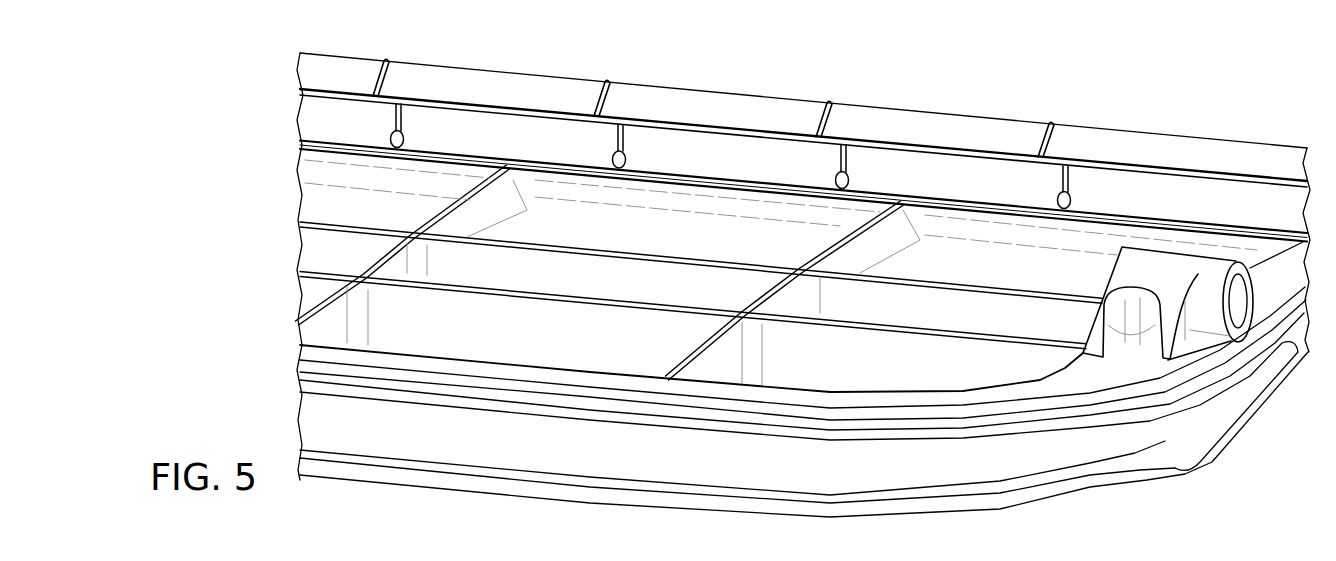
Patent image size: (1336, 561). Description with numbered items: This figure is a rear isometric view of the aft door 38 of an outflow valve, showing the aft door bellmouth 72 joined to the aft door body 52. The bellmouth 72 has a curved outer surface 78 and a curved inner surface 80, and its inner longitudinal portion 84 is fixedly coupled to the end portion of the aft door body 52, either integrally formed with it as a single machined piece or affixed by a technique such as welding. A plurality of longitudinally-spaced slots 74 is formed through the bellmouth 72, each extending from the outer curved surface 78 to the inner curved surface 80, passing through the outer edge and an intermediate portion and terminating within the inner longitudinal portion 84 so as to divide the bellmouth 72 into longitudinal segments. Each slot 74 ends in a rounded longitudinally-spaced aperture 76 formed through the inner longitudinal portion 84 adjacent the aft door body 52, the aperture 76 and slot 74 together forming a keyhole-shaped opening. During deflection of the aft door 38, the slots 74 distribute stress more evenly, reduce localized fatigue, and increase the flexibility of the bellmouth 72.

The aft door 38 is at (244, 240).
The aft door body 52 is at (323, 420).
The aft door bellmouth 72 is at (805, 204).
The longitudinally-spaced slot 74 is at (378, 62).
The longitudinally-spaced aperture 76 is at (390, 137).
The curved outer surface 78 is at (504, 83).
The curved inner surface 80 is at (498, 146).
The inner longitudinal portion 84 is at (695, 180).